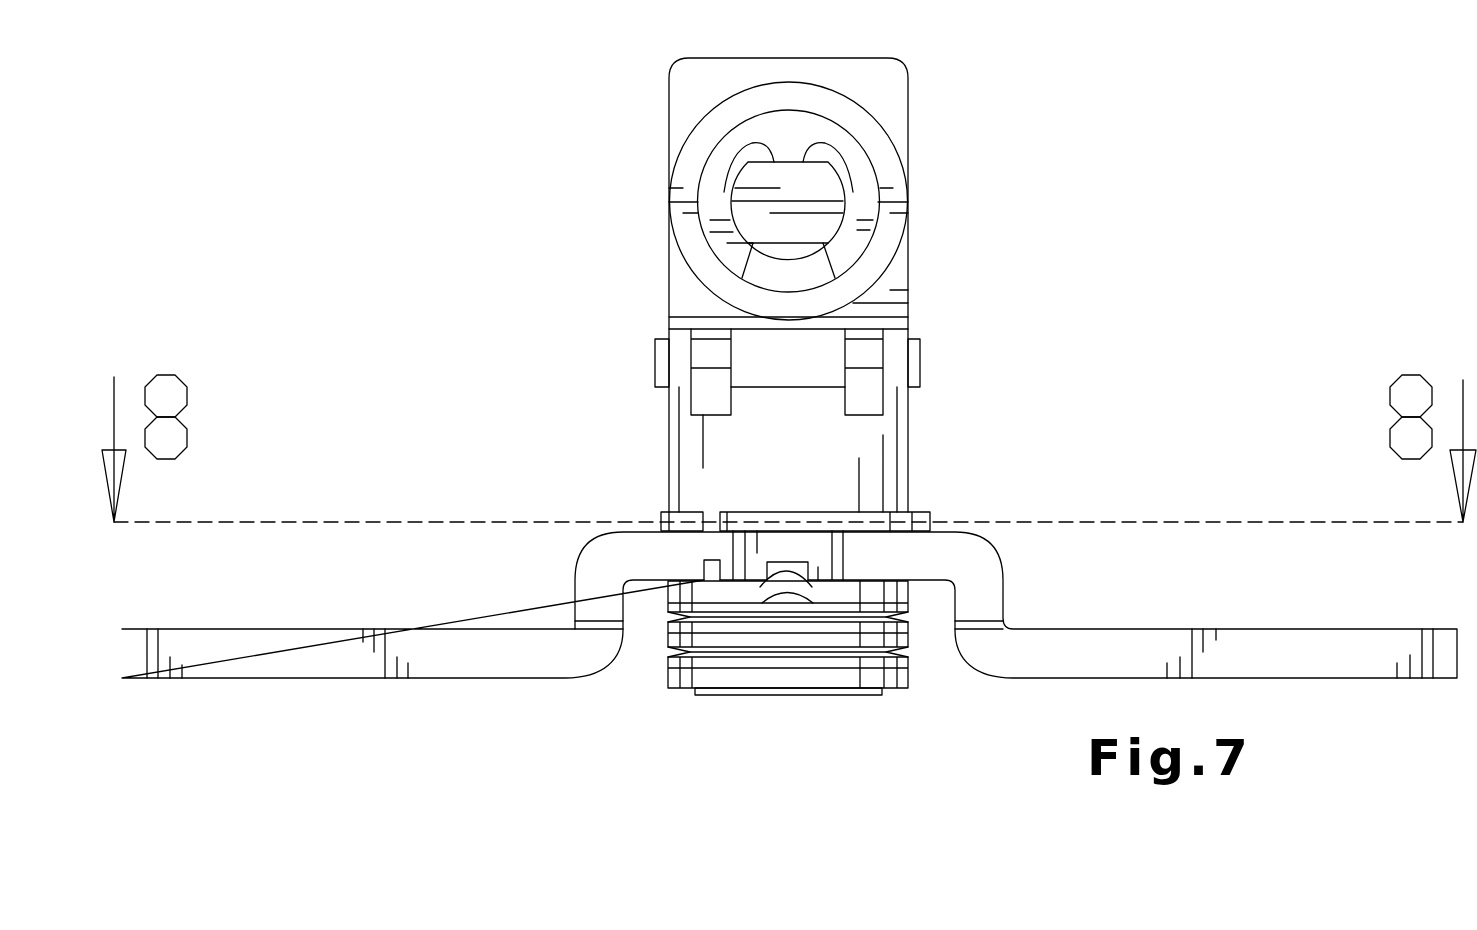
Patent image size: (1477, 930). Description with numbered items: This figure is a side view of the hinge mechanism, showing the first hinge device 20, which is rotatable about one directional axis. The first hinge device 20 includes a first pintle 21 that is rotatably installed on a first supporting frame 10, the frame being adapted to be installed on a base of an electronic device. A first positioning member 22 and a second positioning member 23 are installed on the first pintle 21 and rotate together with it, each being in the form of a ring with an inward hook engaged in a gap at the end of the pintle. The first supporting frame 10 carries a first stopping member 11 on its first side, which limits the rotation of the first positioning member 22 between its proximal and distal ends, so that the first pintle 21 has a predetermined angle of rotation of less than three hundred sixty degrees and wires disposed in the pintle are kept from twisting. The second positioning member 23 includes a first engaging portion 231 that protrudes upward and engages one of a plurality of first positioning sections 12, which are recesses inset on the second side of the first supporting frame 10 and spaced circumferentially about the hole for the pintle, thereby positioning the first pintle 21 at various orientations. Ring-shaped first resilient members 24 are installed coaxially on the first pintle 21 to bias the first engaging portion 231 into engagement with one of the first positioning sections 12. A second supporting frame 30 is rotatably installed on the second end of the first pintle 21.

The first supporting frame 10 is at (355, 678).
The first stopping member 11 is at (678, 515).
The first positioning sections 12 is at (803, 567).
The first hinge device 20 is at (440, 387).
The first pintle 21 is at (598, 448).
The first positioning member 22 is at (870, 520).
The second positioning member 23 is at (677, 590).
The first engaging portion 231 is at (787, 580).
The first resilient members 24 is at (640, 668).
The second supporting frame 30 is at (678, 306).